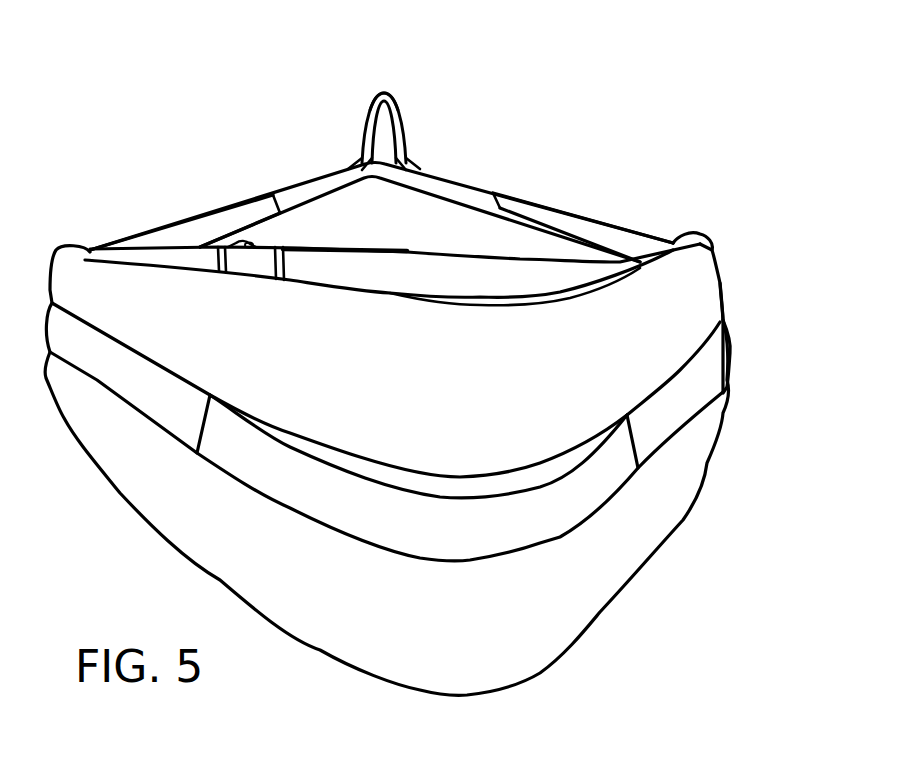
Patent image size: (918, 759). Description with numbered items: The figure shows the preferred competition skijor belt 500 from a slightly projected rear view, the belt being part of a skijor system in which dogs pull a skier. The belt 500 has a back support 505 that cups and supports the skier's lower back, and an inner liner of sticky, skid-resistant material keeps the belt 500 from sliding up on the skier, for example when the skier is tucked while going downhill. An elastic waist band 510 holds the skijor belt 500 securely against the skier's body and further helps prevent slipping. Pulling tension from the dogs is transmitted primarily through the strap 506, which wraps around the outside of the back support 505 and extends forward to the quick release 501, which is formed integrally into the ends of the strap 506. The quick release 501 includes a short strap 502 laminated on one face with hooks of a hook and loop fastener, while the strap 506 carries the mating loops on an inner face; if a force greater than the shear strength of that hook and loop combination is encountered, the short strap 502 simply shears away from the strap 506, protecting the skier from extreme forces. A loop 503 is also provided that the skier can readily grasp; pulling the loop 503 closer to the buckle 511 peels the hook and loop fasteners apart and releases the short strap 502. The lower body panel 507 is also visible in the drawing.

The competition skijor belt 500 is at (617, 97).
The quick release 501 is at (404, 129).
The short strap 502 is at (457, 183).
The loop 503 is at (380, 94).
The back support 505 is at (721, 283).
The strap 506 is at (197, 216).
The lower body panel 507 is at (606, 487).
The elastic waist band 510 is at (420, 260).
The buckle 511 is at (280, 248).